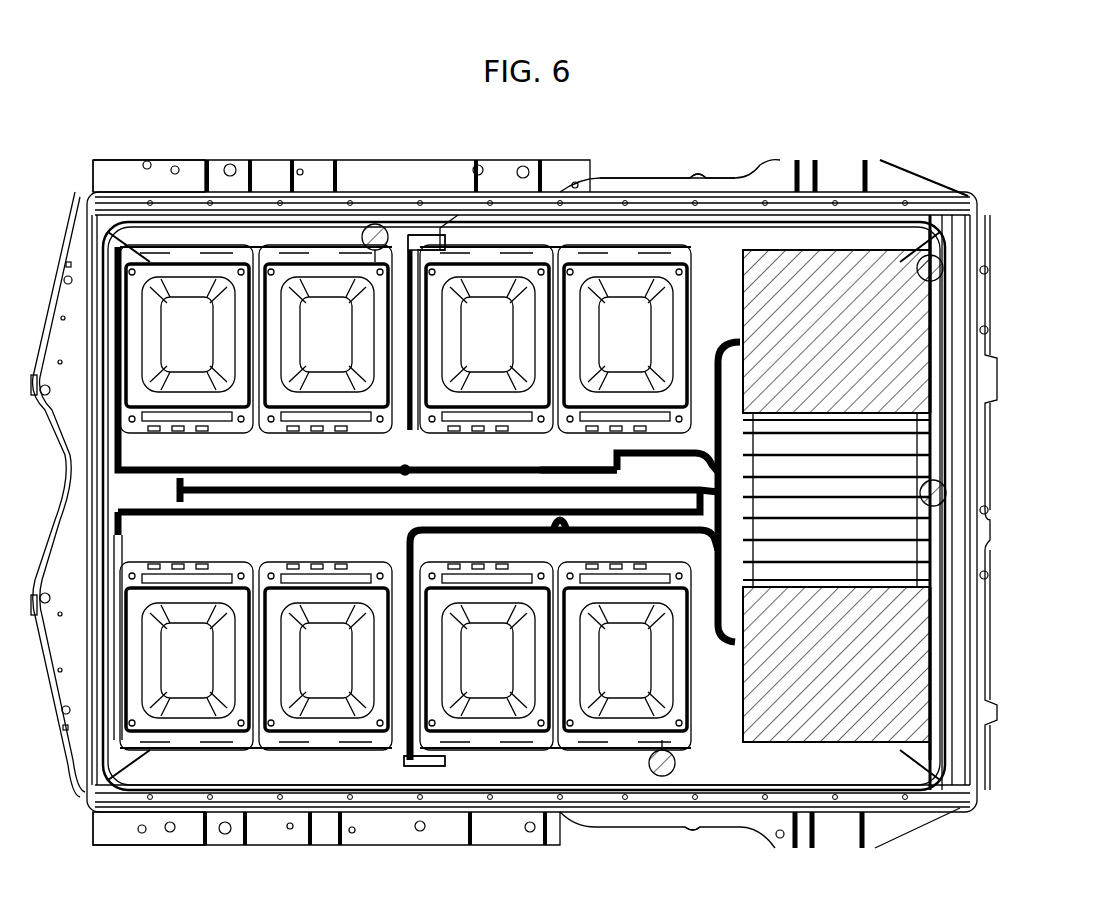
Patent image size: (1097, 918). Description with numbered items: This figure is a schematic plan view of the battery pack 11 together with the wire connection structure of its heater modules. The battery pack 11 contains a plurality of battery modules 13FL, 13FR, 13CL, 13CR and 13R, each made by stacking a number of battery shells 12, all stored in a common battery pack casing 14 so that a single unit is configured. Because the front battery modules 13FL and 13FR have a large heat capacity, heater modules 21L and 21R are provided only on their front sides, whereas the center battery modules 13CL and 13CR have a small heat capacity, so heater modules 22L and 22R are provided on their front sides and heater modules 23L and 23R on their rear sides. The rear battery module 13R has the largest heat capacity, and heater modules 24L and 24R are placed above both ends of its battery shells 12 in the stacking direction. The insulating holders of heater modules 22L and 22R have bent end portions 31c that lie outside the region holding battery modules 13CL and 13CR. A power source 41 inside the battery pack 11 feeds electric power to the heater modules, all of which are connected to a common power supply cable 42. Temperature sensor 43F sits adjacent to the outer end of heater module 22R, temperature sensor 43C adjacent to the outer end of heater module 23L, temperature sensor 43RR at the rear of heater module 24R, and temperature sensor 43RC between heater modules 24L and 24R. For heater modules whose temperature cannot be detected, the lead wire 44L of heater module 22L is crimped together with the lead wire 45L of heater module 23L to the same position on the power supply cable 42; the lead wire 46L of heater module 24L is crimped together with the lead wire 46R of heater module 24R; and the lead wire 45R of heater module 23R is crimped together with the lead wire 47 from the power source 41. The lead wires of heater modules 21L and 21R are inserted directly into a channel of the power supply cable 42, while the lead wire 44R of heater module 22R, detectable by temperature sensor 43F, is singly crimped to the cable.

The battery pack 11 is at (905, 168).
The battery shell 12 is at (1010, 408).
The battery module 13FR is at (290, 247).
The battery module 13FL is at (290, 748).
The battery module 13CR is at (590, 247).
The battery module 13CL is at (590, 748).
The battery module 13R is at (833, 245).
The battery pack casing 14 is at (650, 177).
The heater module 21R is at (103, 220).
The heater module 21L is at (103, 800).
The heater module 22R is at (425, 235).
The heater module 22L is at (425, 768).
The heater module 23R is at (712, 210).
The heater module 23L is at (726, 800).
The heater module 24R is at (900, 352).
The heater module 24L is at (880, 690).
The end portion 31c is at (442, 228).
The power source 41 is at (176, 489).
The power supply cable 42 is at (282, 516).
The temperature sensor 43F is at (375, 222).
The temperature sensor 43C is at (662, 778).
The temperature sensor 43RR is at (945, 268).
The temperature sensor 43RC is at (948, 493).
The lead wire 44R is at (412, 470).
The lead wire 44L is at (455, 535).
The lead wire 45R is at (620, 453).
The lead wire 45L is at (665, 535).
The lead wire 46R is at (726, 340).
The lead wire 46L is at (726, 648).
The lead wire 47 is at (548, 480).